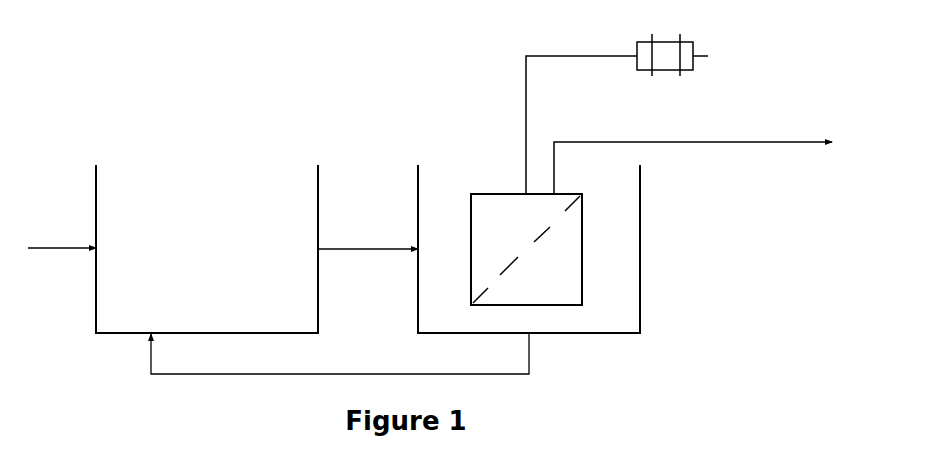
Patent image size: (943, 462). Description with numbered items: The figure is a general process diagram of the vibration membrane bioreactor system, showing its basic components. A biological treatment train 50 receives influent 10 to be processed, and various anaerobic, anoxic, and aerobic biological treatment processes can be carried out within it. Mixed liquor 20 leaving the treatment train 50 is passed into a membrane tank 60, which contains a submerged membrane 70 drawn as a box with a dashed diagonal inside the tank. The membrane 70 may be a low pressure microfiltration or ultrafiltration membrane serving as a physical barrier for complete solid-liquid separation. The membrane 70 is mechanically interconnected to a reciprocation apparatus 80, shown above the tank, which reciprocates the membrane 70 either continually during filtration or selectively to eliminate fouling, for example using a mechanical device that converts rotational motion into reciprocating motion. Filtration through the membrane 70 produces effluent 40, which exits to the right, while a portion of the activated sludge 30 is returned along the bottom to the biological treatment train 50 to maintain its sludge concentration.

The influent 10 is at (62, 238).
The mixed liquor 20 is at (368, 239).
The activated sludge 30 is at (340, 367).
The effluent 40 is at (693, 159).
The biological treatment train 50 is at (207, 249).
The membrane tank 60 is at (529, 249).
The membrane 70 is at (526, 249).
The reciprocation apparatus 80 is at (617, 106).